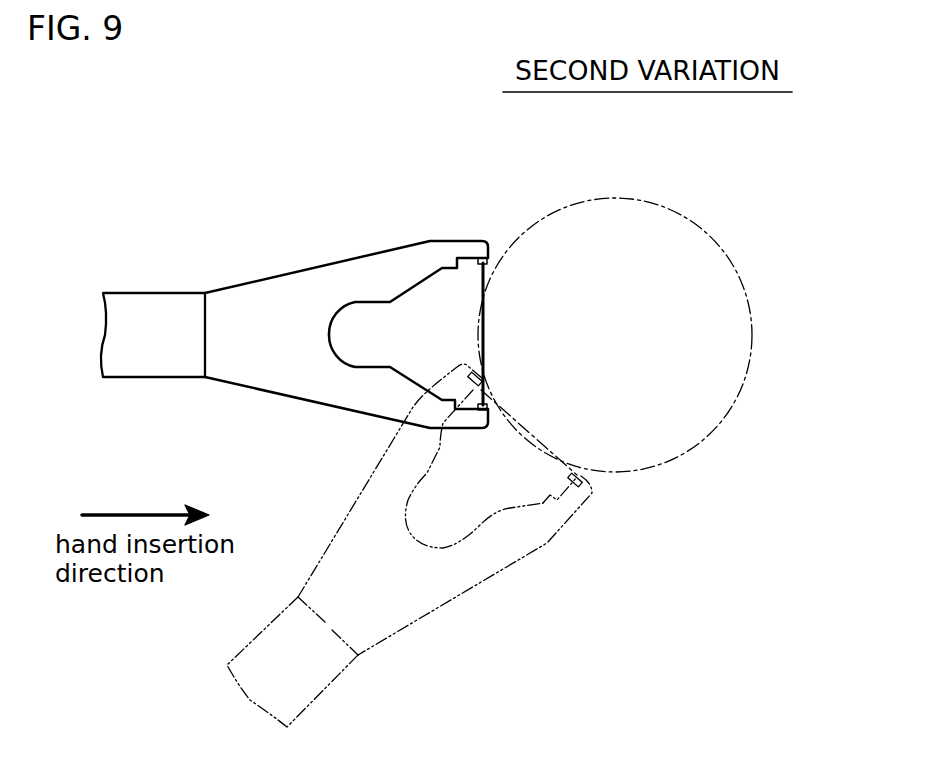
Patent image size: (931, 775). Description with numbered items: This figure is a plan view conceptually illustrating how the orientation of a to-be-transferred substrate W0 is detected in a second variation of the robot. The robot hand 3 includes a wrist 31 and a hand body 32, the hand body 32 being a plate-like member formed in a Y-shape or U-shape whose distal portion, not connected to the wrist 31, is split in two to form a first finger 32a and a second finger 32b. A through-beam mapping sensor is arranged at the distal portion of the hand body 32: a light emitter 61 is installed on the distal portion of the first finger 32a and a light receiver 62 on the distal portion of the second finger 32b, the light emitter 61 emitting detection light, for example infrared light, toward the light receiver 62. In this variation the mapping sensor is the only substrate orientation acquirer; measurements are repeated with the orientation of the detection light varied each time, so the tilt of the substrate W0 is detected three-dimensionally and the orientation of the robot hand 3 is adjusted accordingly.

The robot hand 3 is at (257, 222).
The wrist 31 is at (150, 310).
The hand body 32 is at (258, 305).
The first finger 32a is at (485, 422).
The second finger 32b is at (395, 270).
The light emitter 61 is at (492, 406).
The light receiver 62 is at (493, 262).
The substrate W0 is at (713, 243).